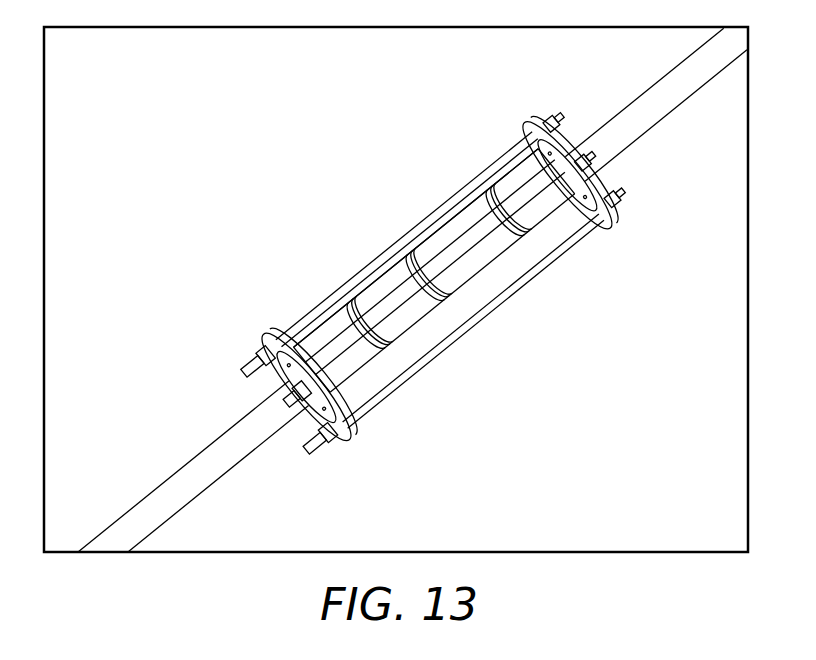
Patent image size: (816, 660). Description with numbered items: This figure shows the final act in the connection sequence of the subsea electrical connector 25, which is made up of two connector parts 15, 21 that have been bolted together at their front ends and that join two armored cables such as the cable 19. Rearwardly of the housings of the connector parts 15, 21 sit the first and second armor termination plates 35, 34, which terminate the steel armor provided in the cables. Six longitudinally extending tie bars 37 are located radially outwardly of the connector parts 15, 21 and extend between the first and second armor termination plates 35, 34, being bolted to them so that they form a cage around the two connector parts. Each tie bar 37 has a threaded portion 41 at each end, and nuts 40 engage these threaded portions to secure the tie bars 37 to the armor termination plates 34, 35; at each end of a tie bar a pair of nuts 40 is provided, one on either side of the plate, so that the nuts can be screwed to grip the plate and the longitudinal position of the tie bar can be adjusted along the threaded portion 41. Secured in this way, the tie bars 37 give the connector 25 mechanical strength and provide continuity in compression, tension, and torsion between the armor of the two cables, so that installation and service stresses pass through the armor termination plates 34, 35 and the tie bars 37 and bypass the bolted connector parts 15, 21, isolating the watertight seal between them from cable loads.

The connector part 15 is at (436, 330).
The cable 19 is at (672, 100).
The connector part 21 is at (518, 270).
The connector 25 is at (323, 248).
The second armor termination plate 34 is at (285, 335).
The first armor termination plate 35 is at (605, 222).
The tie bar 37 is at (442, 215).
The nut 40 is at (340, 443).
The threaded portion 41 is at (312, 458).